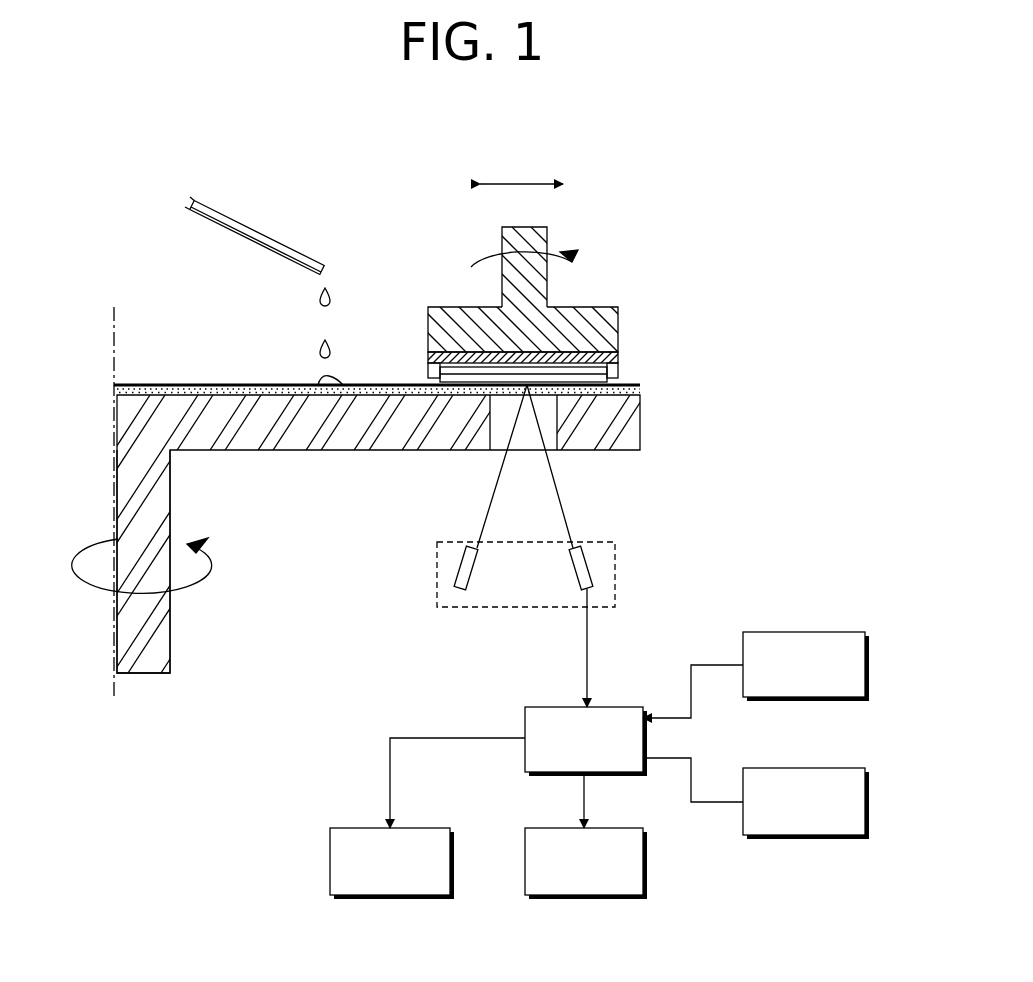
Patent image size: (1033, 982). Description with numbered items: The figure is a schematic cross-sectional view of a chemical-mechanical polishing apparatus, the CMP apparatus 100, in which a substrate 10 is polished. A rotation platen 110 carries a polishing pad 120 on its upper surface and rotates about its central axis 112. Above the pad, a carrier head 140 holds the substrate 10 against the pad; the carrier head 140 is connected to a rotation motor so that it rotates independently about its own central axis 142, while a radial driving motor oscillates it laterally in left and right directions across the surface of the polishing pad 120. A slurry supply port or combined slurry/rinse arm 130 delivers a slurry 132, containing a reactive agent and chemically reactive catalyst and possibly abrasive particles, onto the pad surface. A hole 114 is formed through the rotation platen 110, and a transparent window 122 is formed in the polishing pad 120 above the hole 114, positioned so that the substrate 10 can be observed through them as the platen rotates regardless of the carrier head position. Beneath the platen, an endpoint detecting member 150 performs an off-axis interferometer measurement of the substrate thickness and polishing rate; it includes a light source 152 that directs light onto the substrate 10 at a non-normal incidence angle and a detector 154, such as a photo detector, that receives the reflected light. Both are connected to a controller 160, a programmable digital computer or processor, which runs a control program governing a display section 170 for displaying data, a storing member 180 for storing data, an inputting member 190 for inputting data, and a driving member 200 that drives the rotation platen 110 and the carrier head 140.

The CMP apparatus 100 is at (757, 141).
The substrate 10 is at (618, 370).
The rotation platen 110 is at (640, 441).
The central axis 112 is at (140, 657).
The hole 114 is at (540, 426).
The polishing pad 120 is at (640, 390).
The transparent window 122 is at (497, 396).
The slurry/rinse arm 130 is at (233, 220).
The slurry 132 is at (319, 302).
The carrier head 140 is at (618, 308).
The central axis 142 is at (545, 240).
The endpoint detecting member 150 is at (468, 607).
The light source 152 is at (458, 572).
The detector 154 is at (588, 563).
The controller 160 is at (607, 706).
The display section 170 is at (840, 763).
The storing member 180 is at (645, 870).
The inputting member 190 is at (855, 632).
The driving member 200 is at (340, 826).